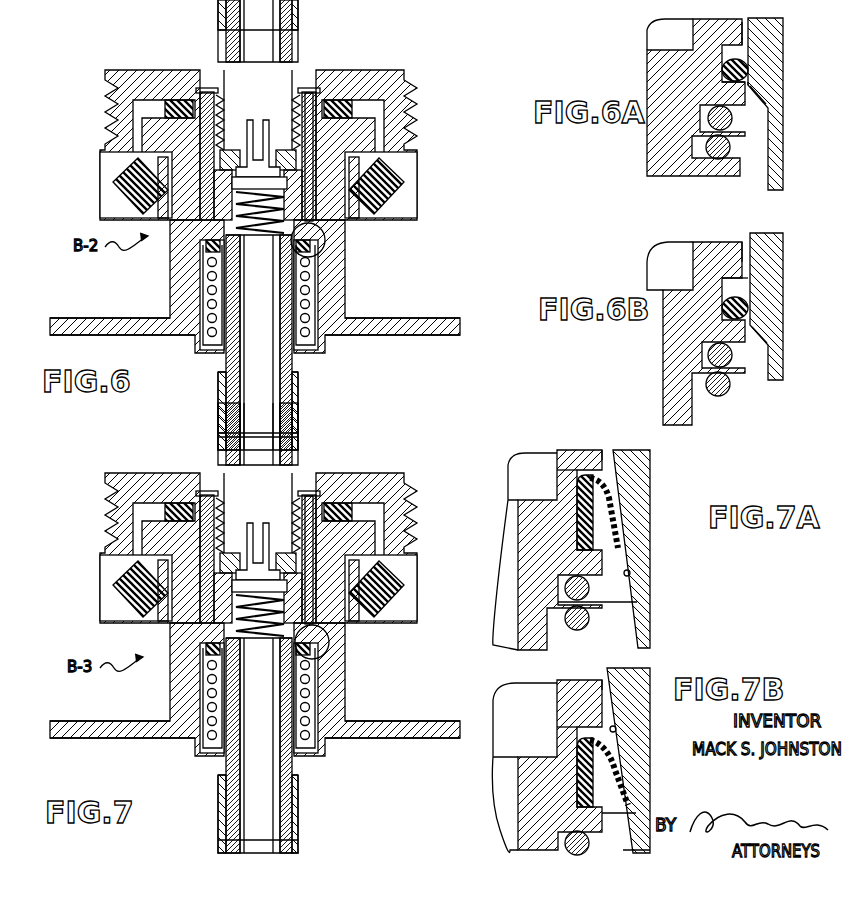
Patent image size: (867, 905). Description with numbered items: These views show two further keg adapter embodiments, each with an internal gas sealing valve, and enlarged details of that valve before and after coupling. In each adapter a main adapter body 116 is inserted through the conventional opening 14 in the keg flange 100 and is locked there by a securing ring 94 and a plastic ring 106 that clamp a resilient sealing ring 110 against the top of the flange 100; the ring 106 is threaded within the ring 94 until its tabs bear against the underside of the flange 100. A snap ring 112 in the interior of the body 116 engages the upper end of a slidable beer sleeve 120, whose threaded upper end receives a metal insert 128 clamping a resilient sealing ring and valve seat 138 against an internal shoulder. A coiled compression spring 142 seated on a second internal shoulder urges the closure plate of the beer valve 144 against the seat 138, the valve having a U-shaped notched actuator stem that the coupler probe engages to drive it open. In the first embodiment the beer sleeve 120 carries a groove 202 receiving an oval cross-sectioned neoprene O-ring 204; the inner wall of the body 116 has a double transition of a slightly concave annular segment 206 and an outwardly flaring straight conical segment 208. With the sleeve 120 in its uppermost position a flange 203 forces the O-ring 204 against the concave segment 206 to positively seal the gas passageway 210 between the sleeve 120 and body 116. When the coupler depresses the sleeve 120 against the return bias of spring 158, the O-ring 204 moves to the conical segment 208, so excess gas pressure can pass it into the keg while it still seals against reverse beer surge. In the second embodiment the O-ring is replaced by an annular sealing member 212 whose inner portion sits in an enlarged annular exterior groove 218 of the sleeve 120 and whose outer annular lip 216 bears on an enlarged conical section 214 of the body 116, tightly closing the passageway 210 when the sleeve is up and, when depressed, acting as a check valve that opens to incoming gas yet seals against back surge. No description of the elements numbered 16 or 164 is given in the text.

In FIG. 6, the opening 14 is at (320, 340).
In FIG. 7, the opening 14 is at (325, 708).
In FIG. 6, the mounting flange 16 is at (427, 320).
In FIG. 7, the mounting flange 16 is at (255, 717).
In FIG. 6, the securing ring 94 is at (365, 70).
In FIG. 7, the securing ring 94 is at (258, 533).
In FIG. 6, the keg flange 100 is at (345, 262).
In FIG. 7, the keg flange 100 is at (255, 689).
In FIG. 6, the plastic ring 106 is at (125, 202).
In FIG. 7, the plastic ring 106 is at (228, 589).
In FIG. 6, the resilient sealing ring 110 is at (178, 100).
In FIG. 7, the resilient sealing ring 110 is at (185, 533).
In FIG. 6, the snap ring 112 is at (307, 86).
In FIG. 7, the snap ring 112 is at (325, 533).
In FIG. 6, the main adapter body 116 is at (316, 140).
In FIG. 7, the main adapter body 116 is at (293, 560).
In FIG. 6A, the main adapter body 116 is at (778, 114).
In FIG. 6B, the main adapter body 116 is at (767, 258).
In FIG. 7A, the main adapter body 116 is at (632, 481).
In FIG. 7B, the main adapter body 116 is at (628, 760).
In FIG. 6, the beer sleeve 120 is at (228, 304).
In FIG. 7, the beer sleeve 120 is at (259, 628).
In FIG. 6A, the beer sleeve 120 is at (673, 80).
In FIG. 6B, the beer sleeve 120 is at (675, 326).
In FIG. 7A, the beer sleeve 120 is at (540, 553).
In FIG. 7B, the beer sleeve 120 is at (535, 793).
In FIG. 6, the metal insert 128 is at (229, 91).
In FIG. 7, the metal insert 128 is at (258, 513).
In FIG. 6, the resilient sealing ring and valve seat 138 is at (230, 148).
In FIG. 7, the resilient sealing ring and valve seat 138 is at (258, 561).
In FIG. 6, the coiled compression spring 142 is at (253, 238).
In FIG. 7, the coiled compression spring 142 is at (259, 630).
In FIG. 6, the beer valve 144 is at (255, 125).
In FIG. 7, the beer valve 144 is at (266, 540).
In FIG. 6, the spring 158 is at (200, 338).
In FIG. 7, the spring 158 is at (182, 708).
In FIG. 6A, the spring 158 is at (718, 159).
In FIG. 6B, the spring 158 is at (720, 396).
In FIG. 7A, the spring 158 is at (587, 622).
In FIG. 7B, the spring 158 is at (577, 843).
In FIG. 6, the tube 164 is at (294, 14).
In FIG. 7, the tube 164 is at (293, 402).
In FIG. 6A, the groove 202 is at (740, 42).
In FIG. 6A, the flange 203 is at (733, 98).
In FIG. 6, the O-ring 204 is at (318, 256).
In FIG. 6A, the O-ring 204 is at (750, 68).
In FIG. 6B, the O-ring 204 is at (743, 320).
In FIG. 6A, the concave annular segment 206 is at (762, 78).
In FIG. 6B, the concave annular segment 206 is at (753, 282).
In FIG. 6A, the straight conical segment 208 is at (766, 89).
In FIG. 6B, the straight conical segment 208 is at (765, 310).
In FIG. 6A, the gas passageway 210 is at (745, 28).
In FIG. 6B, the gas passageway 210 is at (742, 243).
In FIG. 7A, the gas passageway 210 is at (607, 449).
In FIG. 7B, the gas passageway 210 is at (606, 680).
In FIG. 7, the annular sealing member 212 is at (297, 641).
In FIG. 7A, the annular sealing member 212 is at (587, 510).
In FIG. 7B, the annular sealing member 212 is at (583, 757).
In FIG. 7A, the enlarged conical section 214 is at (630, 572).
In FIG. 7B, the enlarged conical section 214 is at (622, 728).
In FIG. 7A, the outer annular lip 216 is at (618, 535).
In FIG. 7B, the outer annular lip 216 is at (623, 765).
In FIG. 7A, the enlarged annular exterior groove 218 is at (578, 478).
In FIG. 7B, the enlarged annular exterior groove 218 is at (592, 730).